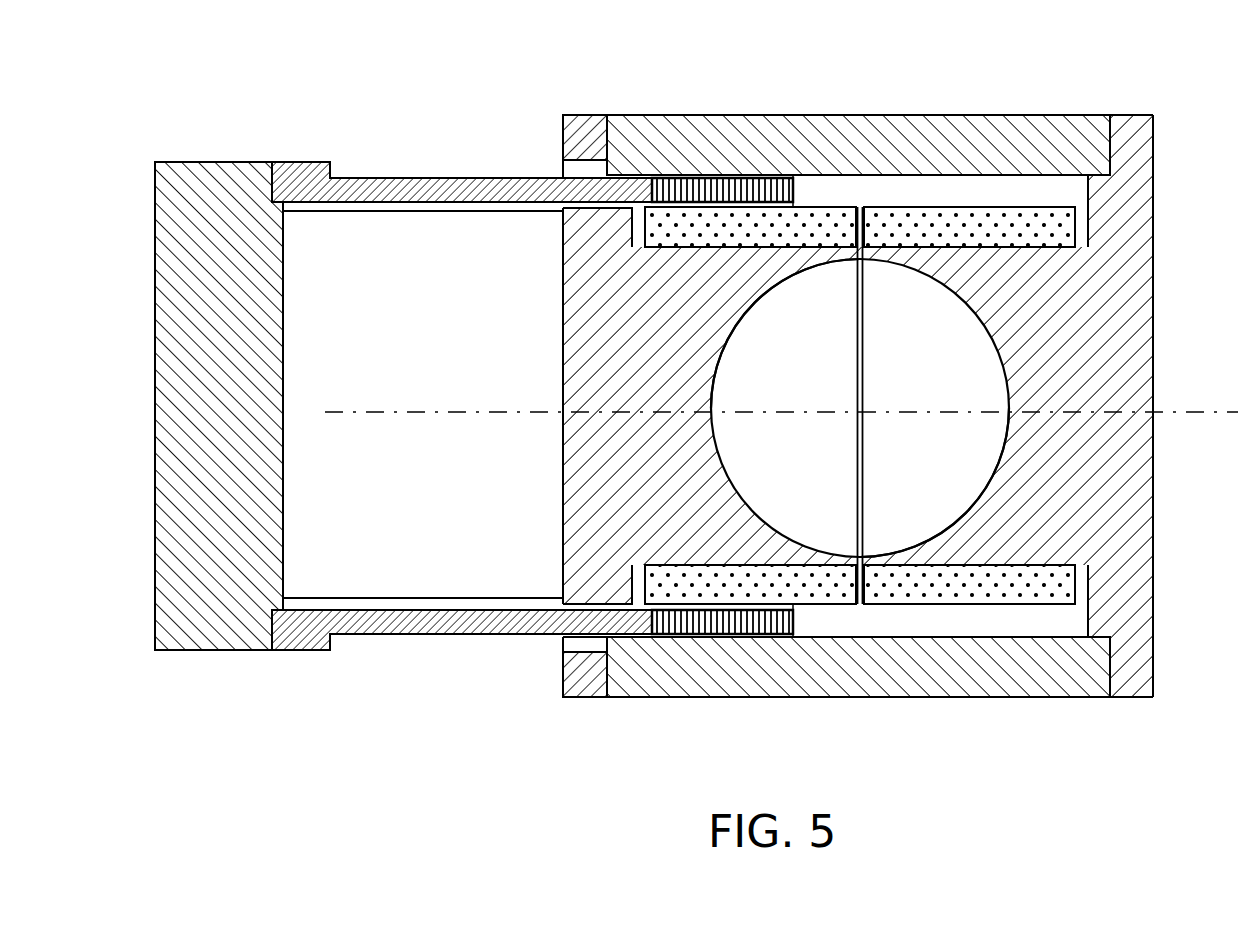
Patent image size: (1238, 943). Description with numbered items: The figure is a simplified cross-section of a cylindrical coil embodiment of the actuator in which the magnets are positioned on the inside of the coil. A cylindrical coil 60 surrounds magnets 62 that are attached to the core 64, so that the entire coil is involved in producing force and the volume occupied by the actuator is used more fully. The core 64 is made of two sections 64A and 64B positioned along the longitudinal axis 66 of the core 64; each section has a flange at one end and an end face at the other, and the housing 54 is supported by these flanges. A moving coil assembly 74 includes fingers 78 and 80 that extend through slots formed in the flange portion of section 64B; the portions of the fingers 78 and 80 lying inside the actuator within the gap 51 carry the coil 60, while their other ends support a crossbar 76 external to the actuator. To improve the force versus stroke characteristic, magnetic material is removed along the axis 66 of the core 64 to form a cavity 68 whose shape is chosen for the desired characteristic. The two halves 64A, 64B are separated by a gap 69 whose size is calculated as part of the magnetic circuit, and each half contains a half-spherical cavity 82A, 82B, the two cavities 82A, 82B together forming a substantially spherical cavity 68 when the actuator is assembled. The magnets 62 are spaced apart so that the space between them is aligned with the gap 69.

The gap 51 is at (903, 187).
The housing 54 is at (965, 143).
The cylindrical coil 60 is at (690, 188).
The magnets 62 is at (806, 228).
The core 64 is at (1145, 297).
The core section 64A is at (1150, 528).
The core section 64B is at (573, 473).
The longitudinal axis 66 is at (472, 411).
The cavity 68 is at (936, 380).
The gap 69 is at (863, 425).
The moving coil assembly 74 is at (391, 158).
The crossbar 76 is at (272, 302).
The finger 78 is at (440, 193).
The finger 80 is at (418, 617).
The half-spherical cavity 82A is at (965, 511).
The half-spherical cavity 82B is at (765, 290).